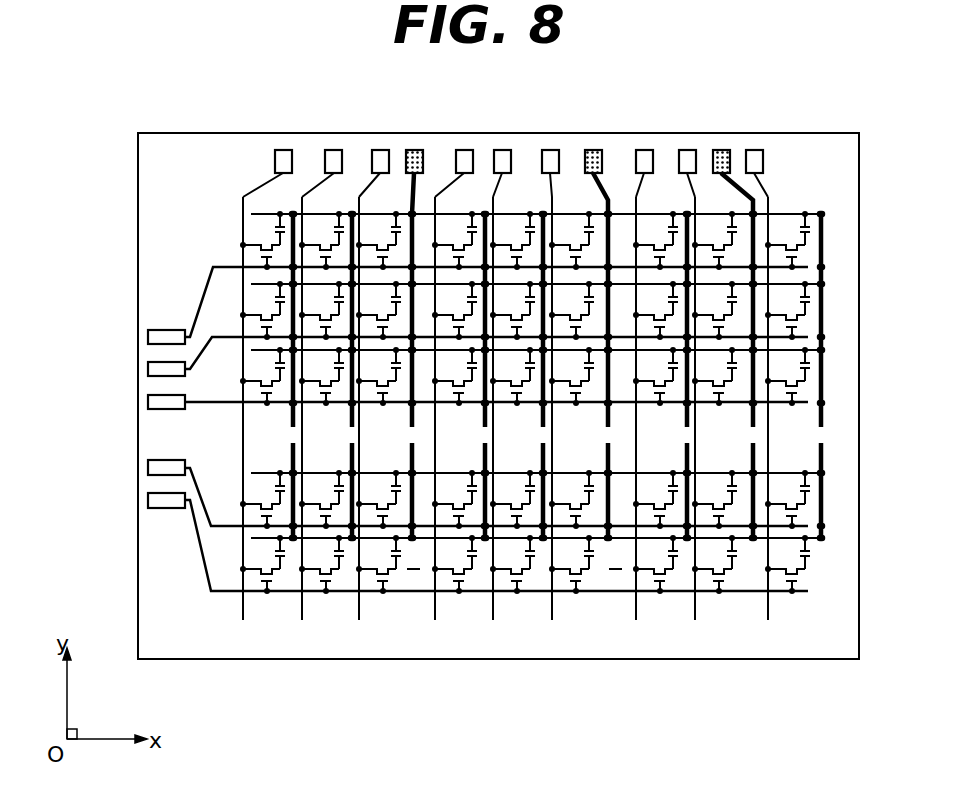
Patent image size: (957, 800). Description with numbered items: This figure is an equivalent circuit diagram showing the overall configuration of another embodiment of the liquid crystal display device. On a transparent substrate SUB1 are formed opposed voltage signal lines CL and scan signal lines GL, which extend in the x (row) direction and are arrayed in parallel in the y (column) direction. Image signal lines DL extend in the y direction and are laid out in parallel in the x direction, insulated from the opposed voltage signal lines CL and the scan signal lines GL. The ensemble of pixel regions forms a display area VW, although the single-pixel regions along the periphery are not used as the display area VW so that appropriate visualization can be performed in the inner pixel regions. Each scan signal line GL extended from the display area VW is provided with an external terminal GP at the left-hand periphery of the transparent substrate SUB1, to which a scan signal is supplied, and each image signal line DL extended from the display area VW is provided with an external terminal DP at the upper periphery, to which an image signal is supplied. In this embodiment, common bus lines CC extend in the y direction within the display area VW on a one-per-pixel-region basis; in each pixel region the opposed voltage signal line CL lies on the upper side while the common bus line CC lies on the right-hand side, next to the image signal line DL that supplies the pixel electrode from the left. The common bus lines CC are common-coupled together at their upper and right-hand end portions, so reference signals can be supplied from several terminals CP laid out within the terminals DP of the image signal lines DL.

The transparent substrate SUB1 is at (303, 133).
The terminal CP is at (720, 150).
The common bus line CC is at (538, 213).
The external terminal DP is at (645, 150).
The external terminal GP is at (166, 330).
The display area VW is at (432, 425).
The image signal line DL is at (247, 605).
The scan signal line GL is at (412, 593).
The opposed voltage signal line CL is at (622, 538).